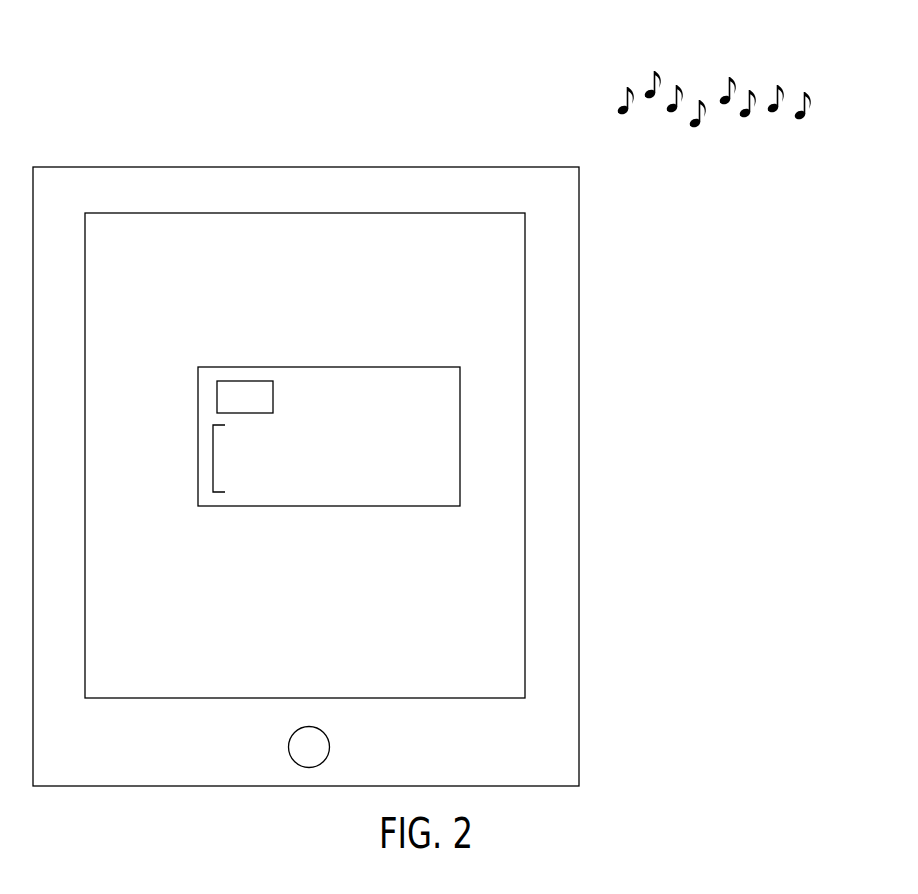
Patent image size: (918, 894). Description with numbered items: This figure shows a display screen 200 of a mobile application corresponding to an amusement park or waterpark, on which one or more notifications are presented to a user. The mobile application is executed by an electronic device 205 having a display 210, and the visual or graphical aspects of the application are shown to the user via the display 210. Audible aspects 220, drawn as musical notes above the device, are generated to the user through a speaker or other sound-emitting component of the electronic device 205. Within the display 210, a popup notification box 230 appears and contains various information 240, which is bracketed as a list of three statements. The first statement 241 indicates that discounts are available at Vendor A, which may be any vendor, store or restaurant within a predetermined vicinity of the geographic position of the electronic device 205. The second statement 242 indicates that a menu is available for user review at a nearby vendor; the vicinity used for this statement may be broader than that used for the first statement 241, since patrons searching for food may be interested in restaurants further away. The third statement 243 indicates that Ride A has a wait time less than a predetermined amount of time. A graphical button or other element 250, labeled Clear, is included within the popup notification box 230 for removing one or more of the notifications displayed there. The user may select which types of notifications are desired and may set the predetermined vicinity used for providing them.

The display screen 200 is at (82, 119).
The electronic device 205 is at (567, 422).
The display 210 is at (107, 627).
The audible aspects 220 is at (765, 64).
The popup notification box 230 is at (412, 508).
The information 240 is at (212, 460).
The first statement 241 is at (393, 438).
The second statement 242 is at (372, 463).
The third statement 243 is at (394, 484).
The graphical button 250 is at (247, 382).